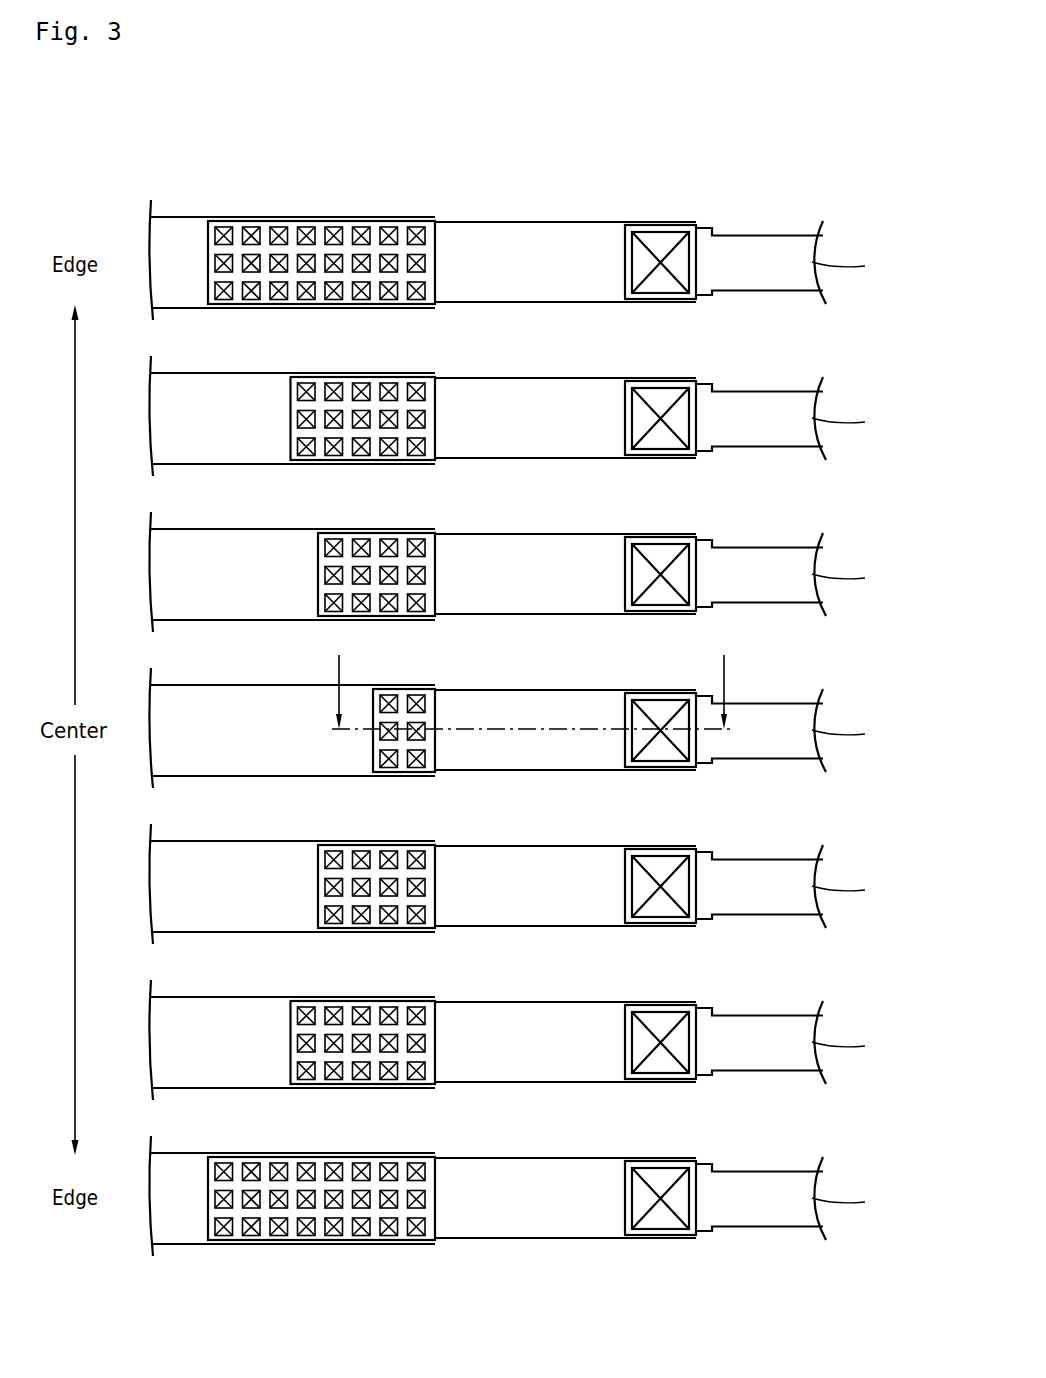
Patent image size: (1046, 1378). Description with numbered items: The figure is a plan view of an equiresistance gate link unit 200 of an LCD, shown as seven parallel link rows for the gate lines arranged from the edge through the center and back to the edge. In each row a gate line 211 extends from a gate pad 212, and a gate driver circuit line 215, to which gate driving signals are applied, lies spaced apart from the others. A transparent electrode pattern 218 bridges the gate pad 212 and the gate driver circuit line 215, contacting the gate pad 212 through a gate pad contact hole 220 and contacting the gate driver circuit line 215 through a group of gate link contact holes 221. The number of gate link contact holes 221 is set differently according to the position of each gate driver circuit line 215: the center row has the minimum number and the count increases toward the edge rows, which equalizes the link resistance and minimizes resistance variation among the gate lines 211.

The equiresistance gate link unit 200 is at (566, 136).
The gate driver circuit line 215 is at (180, 217).
The gate link contact hole 221 is at (307, 221).
The transparent electrode pattern 218 is at (513, 222).
The gate pad 212 is at (659, 225).
The gate pad contact hole 220 is at (638, 257).
The gate line 211 is at (745, 240).